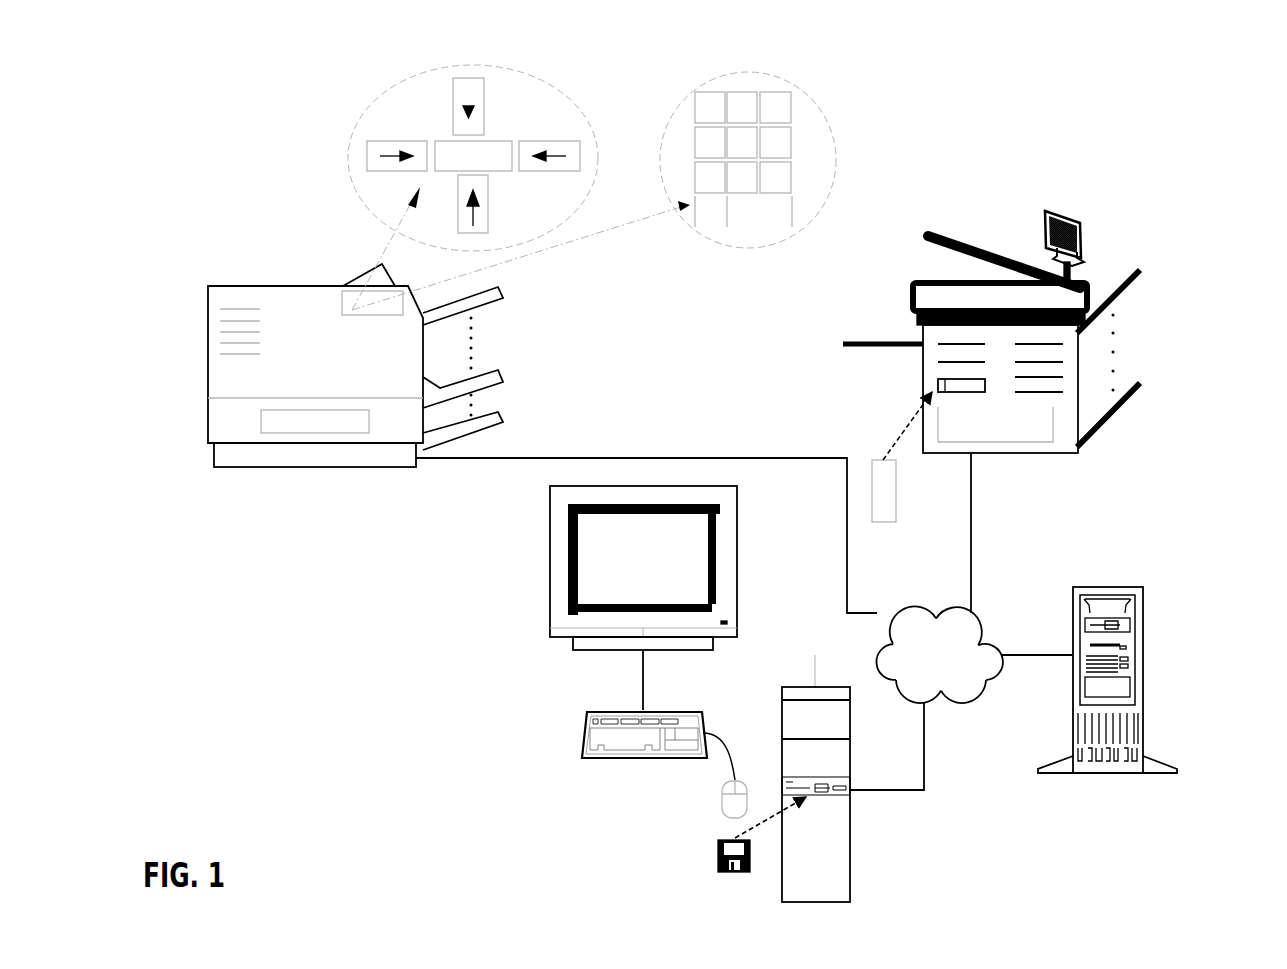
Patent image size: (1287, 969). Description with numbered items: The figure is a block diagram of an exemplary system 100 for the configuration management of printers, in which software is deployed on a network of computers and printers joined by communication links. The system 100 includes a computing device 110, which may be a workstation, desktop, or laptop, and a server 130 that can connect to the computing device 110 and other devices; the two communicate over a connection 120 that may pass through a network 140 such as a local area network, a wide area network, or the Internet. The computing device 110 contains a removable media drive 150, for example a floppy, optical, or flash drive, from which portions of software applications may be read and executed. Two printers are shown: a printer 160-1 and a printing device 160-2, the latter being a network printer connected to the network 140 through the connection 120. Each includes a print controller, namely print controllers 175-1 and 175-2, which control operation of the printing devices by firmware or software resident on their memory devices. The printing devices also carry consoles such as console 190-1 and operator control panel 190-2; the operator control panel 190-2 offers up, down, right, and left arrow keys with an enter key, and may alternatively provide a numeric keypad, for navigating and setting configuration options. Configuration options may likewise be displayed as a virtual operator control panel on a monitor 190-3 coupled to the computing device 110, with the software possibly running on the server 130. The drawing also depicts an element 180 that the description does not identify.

The system 100 is at (213, 186).
The computing device 110 is at (738, 776).
The connection 120 is at (711, 611).
The server 130 is at (1107, 664).
The network 140 is at (954, 664).
The removable media drive 150 is at (762, 848).
The printer 160-1 is at (390, 365).
The printing device 160-2 is at (923, 363).
The print controller 175-1 is at (315, 421).
The print controller 175-2 is at (995, 424).
The access card 180 is at (904, 457).
The console 190-1 is at (1085, 232).
The operator control panel 190-2 is at (342, 302).
The monitor 190-3 is at (547, 520).